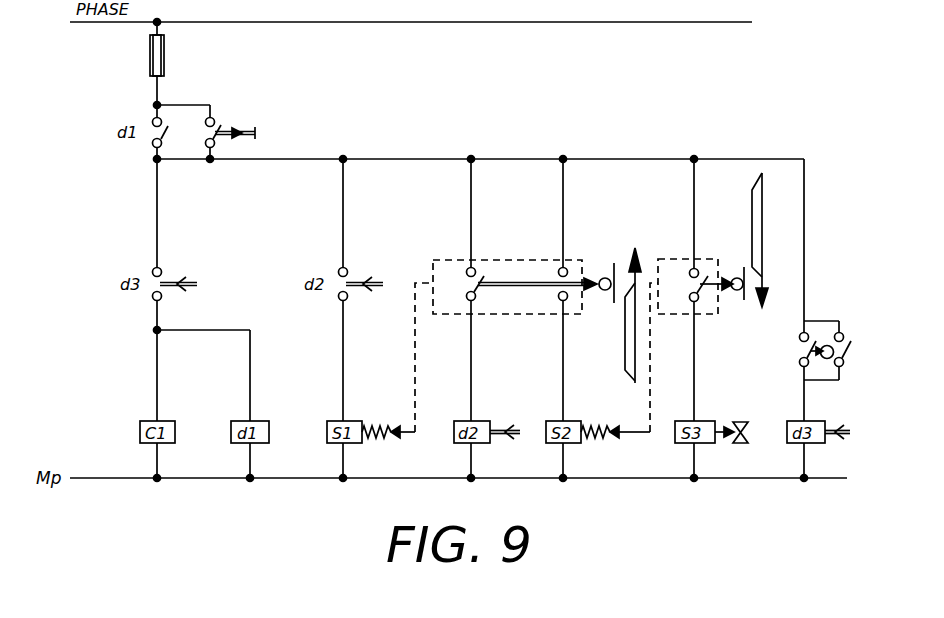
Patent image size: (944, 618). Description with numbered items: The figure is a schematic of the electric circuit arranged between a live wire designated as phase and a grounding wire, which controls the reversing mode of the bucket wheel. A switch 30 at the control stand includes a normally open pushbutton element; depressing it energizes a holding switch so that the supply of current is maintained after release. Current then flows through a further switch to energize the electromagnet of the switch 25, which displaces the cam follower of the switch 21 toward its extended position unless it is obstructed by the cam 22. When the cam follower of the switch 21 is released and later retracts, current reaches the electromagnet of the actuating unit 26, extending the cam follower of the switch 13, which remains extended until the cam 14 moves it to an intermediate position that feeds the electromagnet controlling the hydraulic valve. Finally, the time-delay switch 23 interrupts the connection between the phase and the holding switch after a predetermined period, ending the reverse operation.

The switch 30 is at (228, 129).
The switch 21 is at (523, 287).
The cam 22 is at (613, 315).
The switch 13 is at (701, 236).
The cam 14 is at (775, 240).
The time-delay switch 23 is at (815, 350).
The switch 25 is at (394, 373).
The actuating unit 26 is at (618, 375).